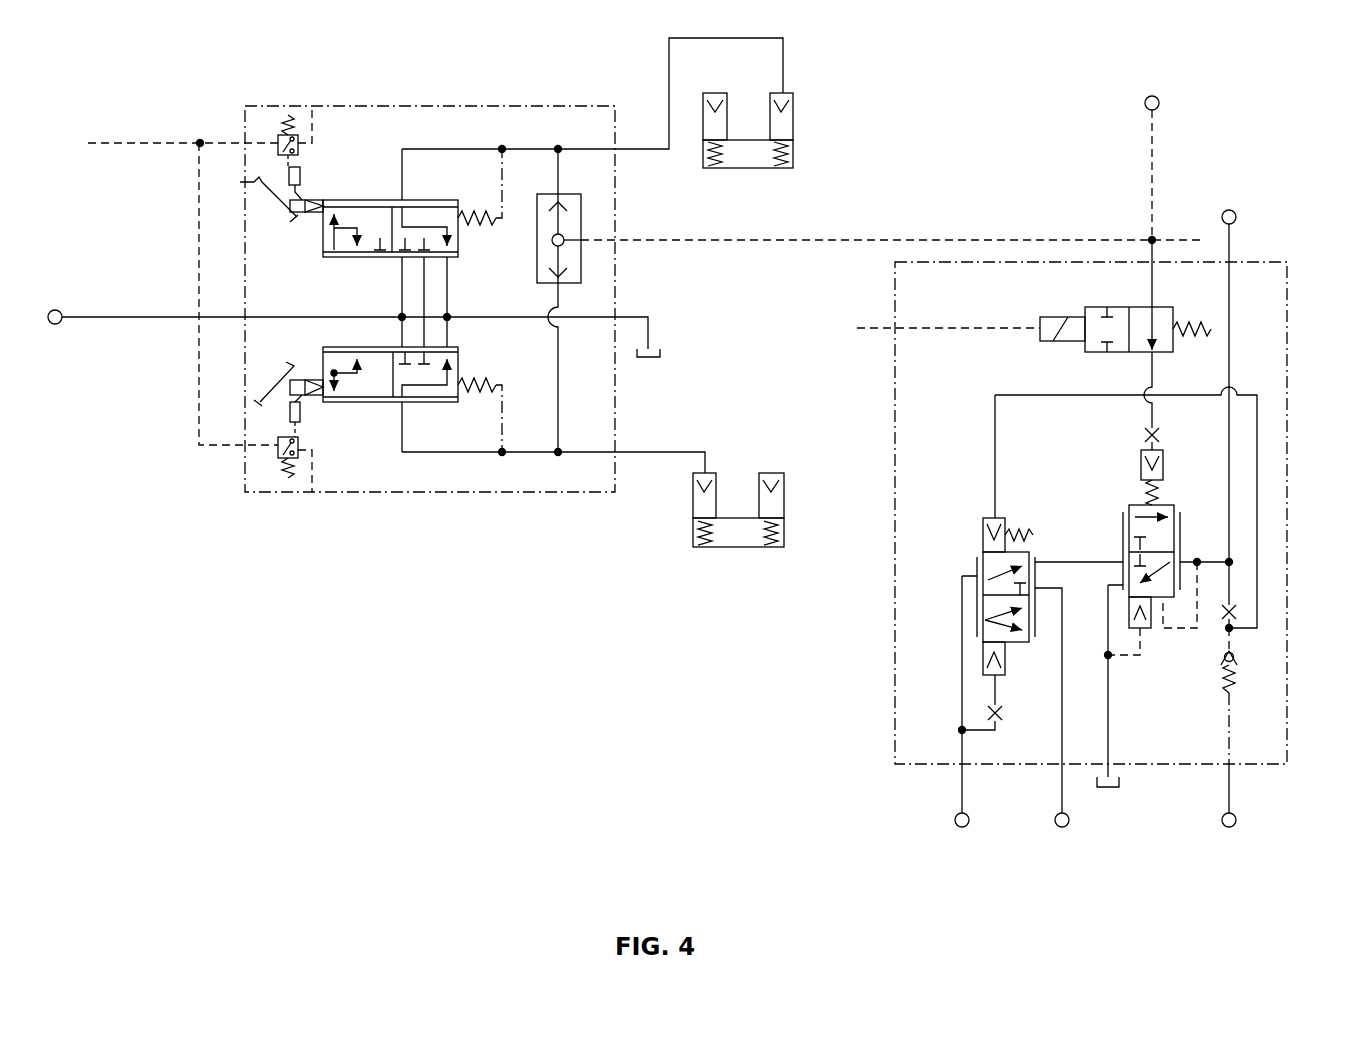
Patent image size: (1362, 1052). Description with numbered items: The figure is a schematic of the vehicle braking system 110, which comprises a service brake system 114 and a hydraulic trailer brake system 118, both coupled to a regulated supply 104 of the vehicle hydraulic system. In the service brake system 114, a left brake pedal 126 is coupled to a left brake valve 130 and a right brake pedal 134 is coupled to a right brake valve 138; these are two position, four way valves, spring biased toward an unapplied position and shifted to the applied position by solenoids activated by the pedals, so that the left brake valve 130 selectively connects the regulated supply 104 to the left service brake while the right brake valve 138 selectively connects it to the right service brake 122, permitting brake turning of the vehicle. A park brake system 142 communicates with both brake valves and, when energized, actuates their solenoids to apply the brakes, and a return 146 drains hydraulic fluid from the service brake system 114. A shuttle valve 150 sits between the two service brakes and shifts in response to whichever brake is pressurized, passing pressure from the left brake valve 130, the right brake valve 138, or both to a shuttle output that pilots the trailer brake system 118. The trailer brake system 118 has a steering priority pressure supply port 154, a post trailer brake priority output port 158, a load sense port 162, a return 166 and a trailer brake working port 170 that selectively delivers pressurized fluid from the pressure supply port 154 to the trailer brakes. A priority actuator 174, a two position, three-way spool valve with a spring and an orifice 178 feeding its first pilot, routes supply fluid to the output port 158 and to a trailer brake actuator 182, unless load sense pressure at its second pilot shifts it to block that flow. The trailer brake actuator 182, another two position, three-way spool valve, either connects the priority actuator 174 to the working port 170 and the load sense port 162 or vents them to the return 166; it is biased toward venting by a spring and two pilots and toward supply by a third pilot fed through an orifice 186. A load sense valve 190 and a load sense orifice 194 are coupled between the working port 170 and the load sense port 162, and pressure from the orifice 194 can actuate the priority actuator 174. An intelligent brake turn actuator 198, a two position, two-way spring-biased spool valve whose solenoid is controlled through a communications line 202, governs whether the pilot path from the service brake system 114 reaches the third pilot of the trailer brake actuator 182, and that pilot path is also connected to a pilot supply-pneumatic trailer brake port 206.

The regulated supply 104 is at (55, 325).
The braking system 110 is at (234, 598).
The service brake system 114 is at (432, 493).
The trailer brake system 118 is at (795, 148).
The right service brake 122 is at (693, 525).
The left brake pedal 126 is at (245, 182).
The left brake valve 130 is at (362, 200).
The right brake pedal 134 is at (260, 402).
The right brake valve 138 is at (330, 405).
The park brake system 142 is at (120, 147).
The return 146 is at (658, 358).
The shuttle valve 150 is at (581, 262).
The pressure supply port 154 is at (955, 818).
The post trailer brake priority output port 158 is at (1055, 818).
The load sense port 162 is at (1237, 820).
The return 166 is at (1113, 787).
The trailer brake working port 170 is at (1236, 220).
The priority actuator 174 is at (977, 560).
The orifice 178 is at (1000, 710).
The trailer brake actuator 182 is at (1122, 534).
The orifice 186 is at (1143, 437).
The load sense valve 190 is at (1240, 667).
The orifice 194 is at (1236, 610).
The intelligent brake turn actuator 198 is at (1098, 307).
The communications line 202 is at (882, 328).
The pilot supply-pneumatic trailer brake port 206 is at (1145, 103).